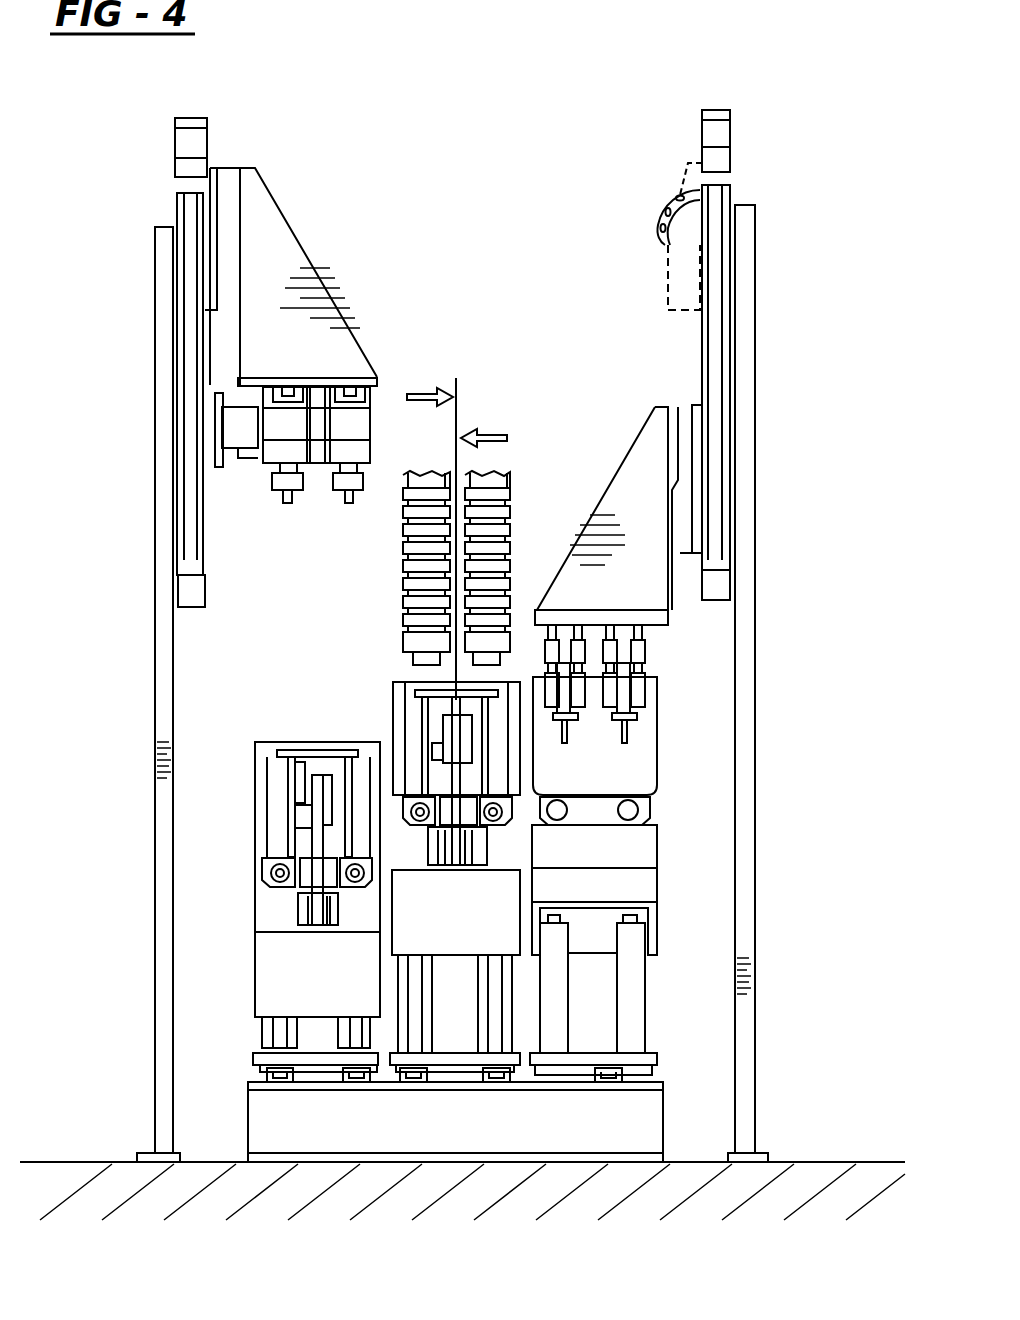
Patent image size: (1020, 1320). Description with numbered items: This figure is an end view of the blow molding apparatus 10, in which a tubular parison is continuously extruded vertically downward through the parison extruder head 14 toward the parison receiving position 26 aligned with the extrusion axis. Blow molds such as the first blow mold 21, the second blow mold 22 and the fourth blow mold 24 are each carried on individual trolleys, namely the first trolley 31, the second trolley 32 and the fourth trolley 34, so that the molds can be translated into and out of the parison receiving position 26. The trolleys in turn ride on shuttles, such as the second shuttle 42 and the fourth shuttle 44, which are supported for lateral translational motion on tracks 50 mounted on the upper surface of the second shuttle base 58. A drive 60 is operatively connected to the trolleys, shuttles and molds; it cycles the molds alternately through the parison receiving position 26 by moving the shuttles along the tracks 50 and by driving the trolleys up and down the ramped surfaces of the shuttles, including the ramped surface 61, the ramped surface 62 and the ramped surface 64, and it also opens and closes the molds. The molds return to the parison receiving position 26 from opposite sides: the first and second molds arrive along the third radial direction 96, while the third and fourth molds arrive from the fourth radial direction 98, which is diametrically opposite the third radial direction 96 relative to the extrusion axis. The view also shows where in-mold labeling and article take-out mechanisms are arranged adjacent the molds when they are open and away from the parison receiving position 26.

The blow molding apparatus 10 is at (508, 212).
The parison extruder head 14 is at (392, 570).
The first blow mold 21 is at (403, 761).
The parison receiving position 26 is at (415, 720).
The second blow mold 22 is at (307, 817).
The fourth blow mold 24 is at (645, 730).
The first trolley 31 is at (470, 1061).
The ramped surface of first shuttle 61 is at (473, 1045).
The second trolley 32 is at (275, 950).
The fourth trolley 34 is at (650, 848).
The fourth shuttle 44 is at (685, 995).
The ramped surface of fourth shuttle 64 is at (608, 987).
The tracks 50 is at (360, 1078).
The second shuttle base 58 is at (594, 1138).
The drive 60 is at (283, 788).
The ramped surface of second shuttle 62 is at (221, 1044).
The second shuttle 42 is at (300, 1035).
The third radial direction 96 is at (482, 430).
The fourth radial direction 98 is at (428, 392).